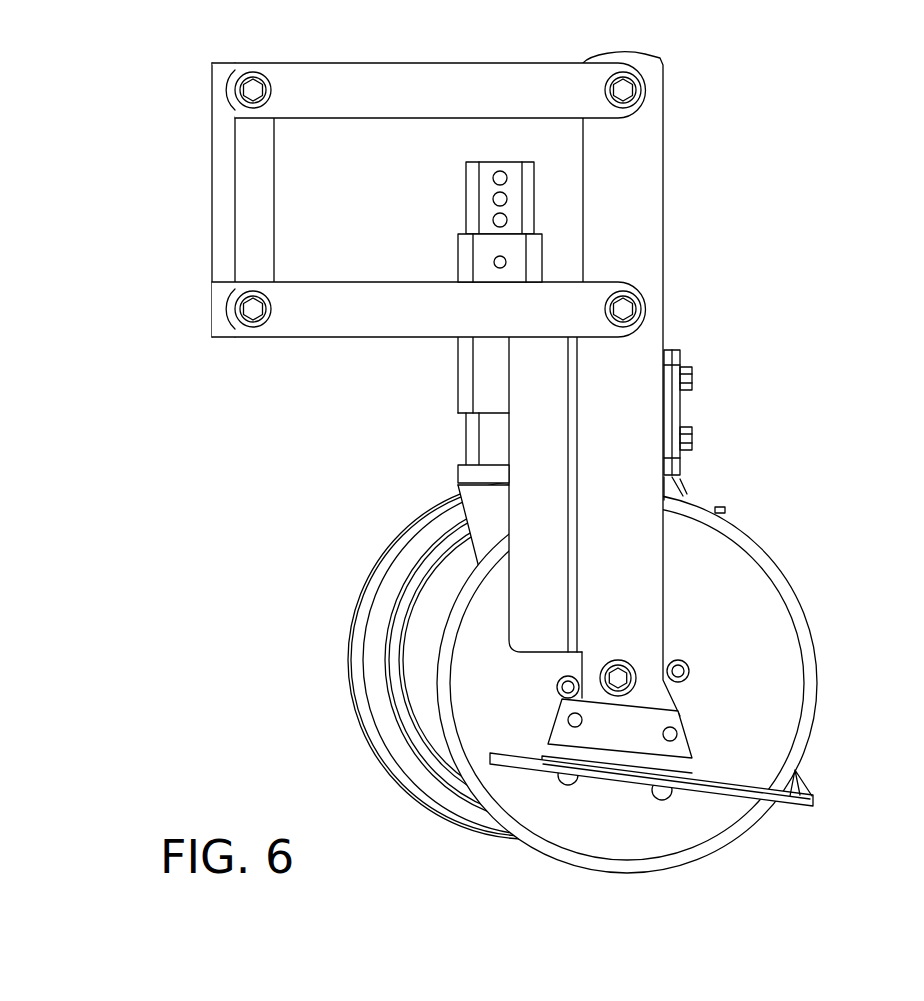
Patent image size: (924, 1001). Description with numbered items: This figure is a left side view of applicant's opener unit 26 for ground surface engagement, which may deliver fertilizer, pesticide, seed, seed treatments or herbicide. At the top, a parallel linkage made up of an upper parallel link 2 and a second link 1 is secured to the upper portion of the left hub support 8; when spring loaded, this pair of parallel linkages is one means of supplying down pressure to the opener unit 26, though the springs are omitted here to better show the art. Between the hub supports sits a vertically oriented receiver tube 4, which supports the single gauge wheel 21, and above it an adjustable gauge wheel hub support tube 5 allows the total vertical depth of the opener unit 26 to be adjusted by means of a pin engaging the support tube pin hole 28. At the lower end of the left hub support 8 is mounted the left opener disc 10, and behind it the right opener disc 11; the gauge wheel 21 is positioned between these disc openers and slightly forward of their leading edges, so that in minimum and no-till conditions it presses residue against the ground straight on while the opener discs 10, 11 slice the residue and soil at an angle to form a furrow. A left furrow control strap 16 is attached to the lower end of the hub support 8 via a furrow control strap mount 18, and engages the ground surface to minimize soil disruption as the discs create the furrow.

The upper link arm 1 is at (383, 63).
The upper parallel link 2 is at (345, 337).
The receiver tube 4 is at (458, 252).
The adjustable gauge wheel hub support tube 5 is at (465, 194).
The left hub support 8 is at (663, 192).
The left opener disc 10 is at (650, 868).
The right opener disc 11 is at (402, 598).
The left furrow control strap 16 is at (792, 810).
The furrow control strap mount 18 is at (675, 752).
The gauge wheel 21 is at (350, 662).
The opener unit 26 is at (826, 128).
The support tube pin hole 28 is at (493, 259).